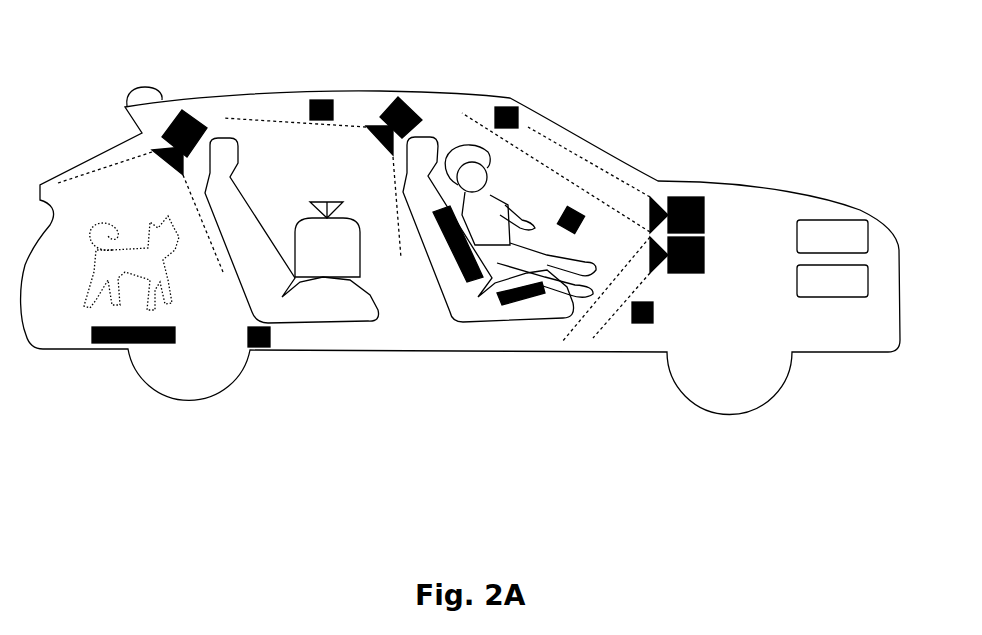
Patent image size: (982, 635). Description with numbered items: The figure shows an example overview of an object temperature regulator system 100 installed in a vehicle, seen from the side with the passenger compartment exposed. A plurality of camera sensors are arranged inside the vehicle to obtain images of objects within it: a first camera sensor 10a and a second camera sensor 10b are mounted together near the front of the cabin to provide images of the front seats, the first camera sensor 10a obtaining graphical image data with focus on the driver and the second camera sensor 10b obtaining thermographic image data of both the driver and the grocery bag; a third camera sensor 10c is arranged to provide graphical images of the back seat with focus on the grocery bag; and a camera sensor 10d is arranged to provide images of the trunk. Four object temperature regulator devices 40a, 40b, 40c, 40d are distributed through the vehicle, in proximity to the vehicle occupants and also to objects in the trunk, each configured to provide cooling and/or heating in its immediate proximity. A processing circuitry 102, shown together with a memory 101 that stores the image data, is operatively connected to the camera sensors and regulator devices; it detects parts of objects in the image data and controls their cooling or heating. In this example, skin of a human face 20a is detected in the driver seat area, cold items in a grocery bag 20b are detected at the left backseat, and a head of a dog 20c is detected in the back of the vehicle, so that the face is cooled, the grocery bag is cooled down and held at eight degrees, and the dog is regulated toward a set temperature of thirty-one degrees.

The object temperature regulator system 100 is at (112, 72).
The first camera sensor 10a is at (711, 217).
The second camera sensor 10b is at (711, 256).
The third camera sensor 10c is at (412, 110).
The camera sensor 10d is at (197, 117).
The skin of human face 20a is at (496, 183).
The grocery bag 20b is at (328, 200).
The head of a dog 20c is at (176, 256).
The object temperature regulator device 40a is at (583, 210).
The object temperature regulator device 40b is at (510, 105).
The object temperature regulator device 40c is at (323, 100).
The object temperature regulator device 40d is at (152, 345).
The memory 101 is at (832, 236).
The processing circuitry 102 is at (832, 281).